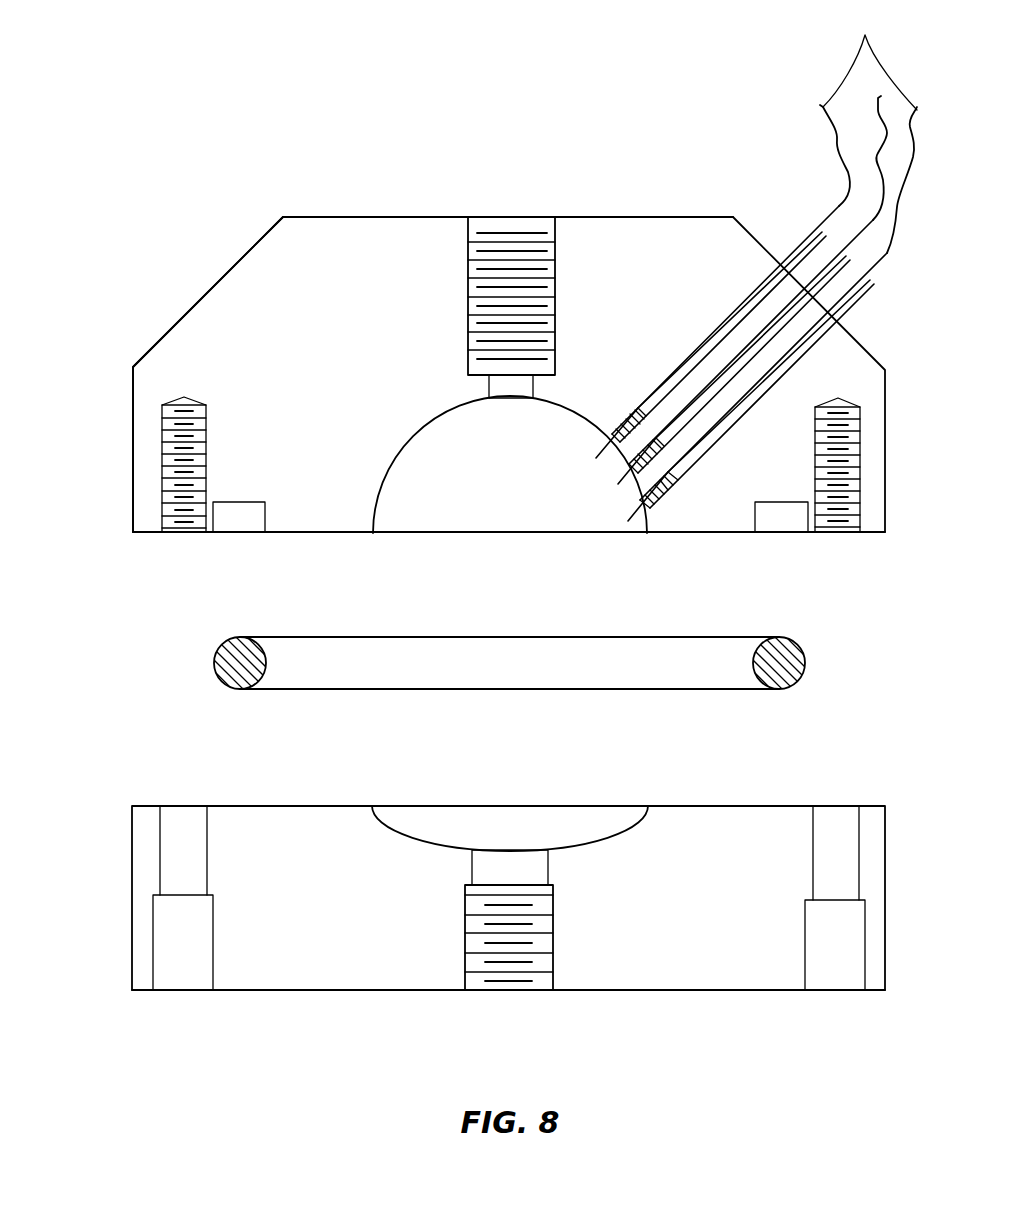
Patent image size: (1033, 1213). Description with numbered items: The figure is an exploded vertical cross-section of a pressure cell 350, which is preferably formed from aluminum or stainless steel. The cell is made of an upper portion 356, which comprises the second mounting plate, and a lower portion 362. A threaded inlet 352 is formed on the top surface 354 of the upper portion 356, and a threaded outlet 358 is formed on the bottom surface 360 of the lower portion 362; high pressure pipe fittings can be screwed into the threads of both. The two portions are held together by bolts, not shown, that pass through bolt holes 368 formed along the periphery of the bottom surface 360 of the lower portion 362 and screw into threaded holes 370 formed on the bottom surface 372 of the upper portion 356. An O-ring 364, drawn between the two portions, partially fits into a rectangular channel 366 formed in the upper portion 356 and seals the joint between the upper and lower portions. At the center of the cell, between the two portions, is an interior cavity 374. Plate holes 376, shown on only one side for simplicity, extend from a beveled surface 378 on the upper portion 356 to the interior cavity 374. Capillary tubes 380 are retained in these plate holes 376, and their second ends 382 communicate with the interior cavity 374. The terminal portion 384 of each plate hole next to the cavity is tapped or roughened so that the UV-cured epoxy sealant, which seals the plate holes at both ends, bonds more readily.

The pressure cell 350 is at (187, 120).
The threaded inlet 352 is at (508, 238).
The top surface 354 is at (322, 216).
The upper portion 356 is at (225, 272).
The threaded outlet 358 is at (523, 968).
The bottom surface 360 is at (653, 991).
The lower portion 362 is at (128, 957).
The O-ring 364 is at (408, 636).
The rectangular channel 366 is at (242, 525).
The bolt holes 368 is at (826, 991).
The threaded holes 370 is at (183, 533).
The bottom surface 372 is at (737, 533).
The interior cavity 374 is at (440, 428).
The plate holes 376 is at (688, 402).
The beveled surface 378 is at (876, 304).
The capillary tubes 380 is at (878, 113).
The second ends 382 is at (597, 460).
The terminal portion 384 is at (670, 477).